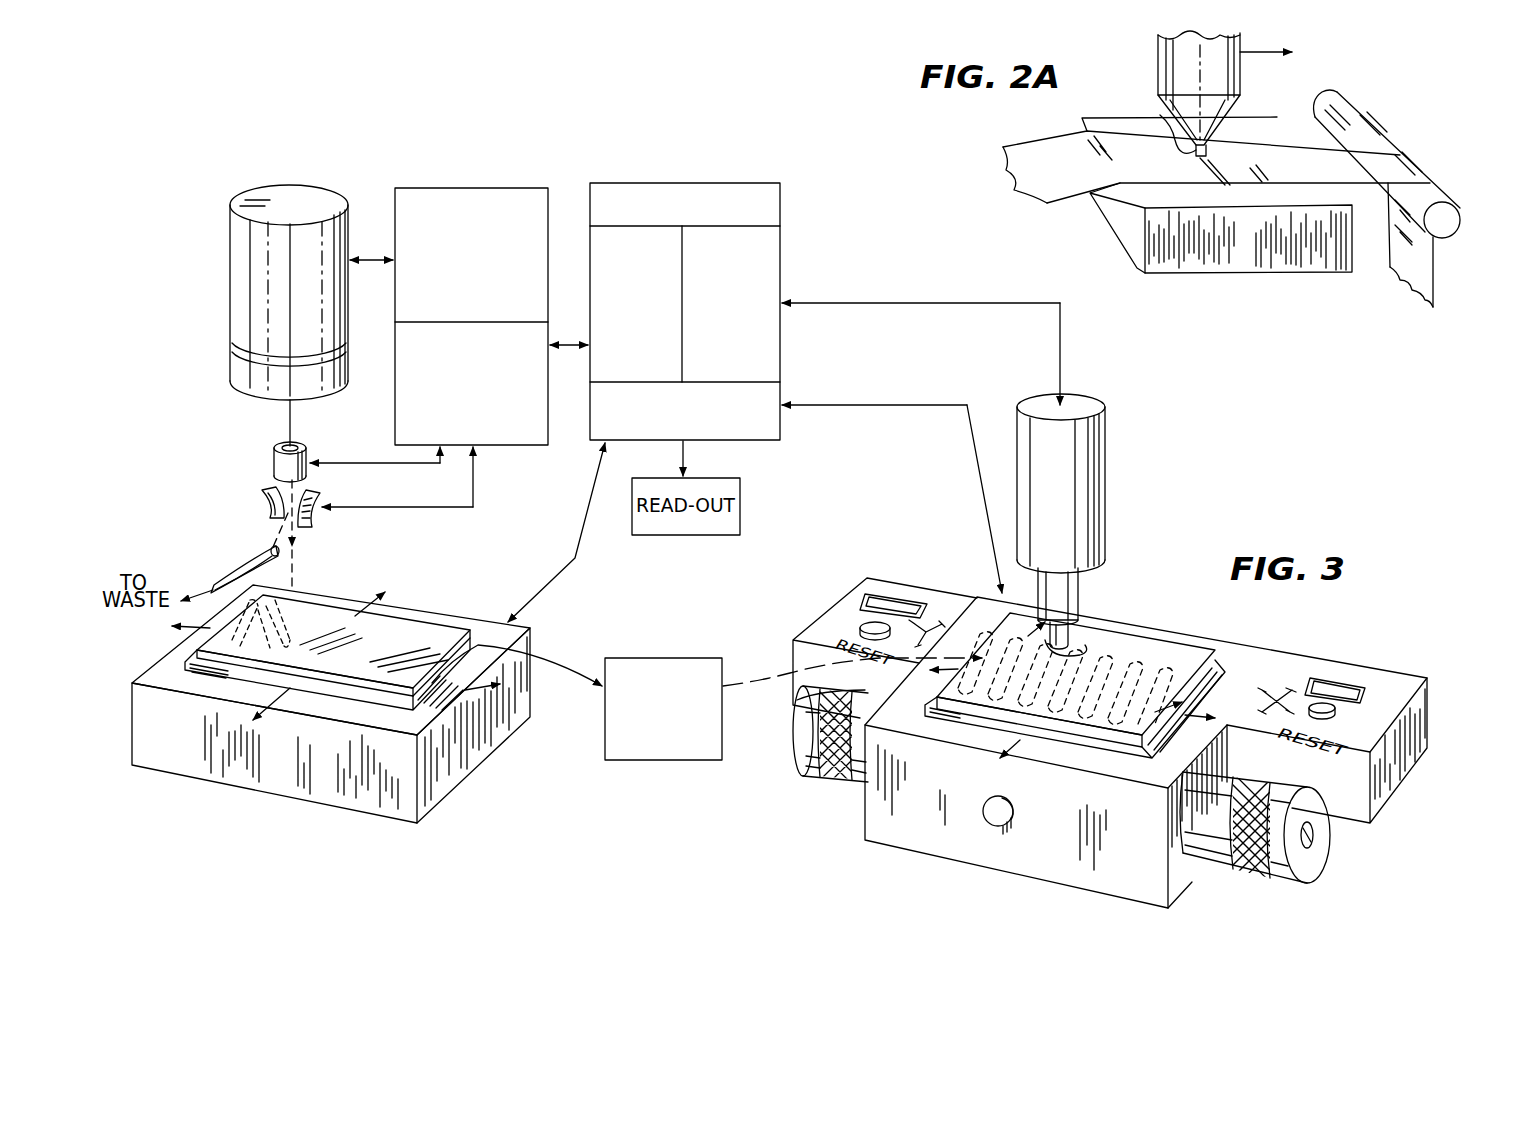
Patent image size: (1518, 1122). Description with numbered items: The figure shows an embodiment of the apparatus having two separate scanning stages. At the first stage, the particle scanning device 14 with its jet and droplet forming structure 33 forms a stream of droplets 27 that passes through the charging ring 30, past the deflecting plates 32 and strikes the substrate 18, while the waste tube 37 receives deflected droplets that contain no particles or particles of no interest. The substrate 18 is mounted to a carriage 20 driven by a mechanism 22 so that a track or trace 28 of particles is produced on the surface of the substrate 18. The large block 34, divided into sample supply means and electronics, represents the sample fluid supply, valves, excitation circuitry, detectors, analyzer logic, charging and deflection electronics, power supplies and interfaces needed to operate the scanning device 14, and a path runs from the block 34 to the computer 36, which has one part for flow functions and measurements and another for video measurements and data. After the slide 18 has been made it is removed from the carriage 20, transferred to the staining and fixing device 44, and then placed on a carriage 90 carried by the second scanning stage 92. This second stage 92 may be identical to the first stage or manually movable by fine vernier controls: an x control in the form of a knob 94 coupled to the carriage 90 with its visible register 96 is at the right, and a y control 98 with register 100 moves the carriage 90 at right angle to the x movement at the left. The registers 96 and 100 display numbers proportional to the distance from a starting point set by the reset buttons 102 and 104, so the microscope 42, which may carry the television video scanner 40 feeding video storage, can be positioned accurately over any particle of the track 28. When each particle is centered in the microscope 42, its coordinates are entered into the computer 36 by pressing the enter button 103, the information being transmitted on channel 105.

The particle scanning device 14 is at (265, 292).
The droplet forming structure 33 is at (267, 364).
The stream of droplets 27 is at (290, 417).
The charging ring 30 is at (282, 461).
The deflecting plates 32 is at (262, 505).
The waste tube 37 is at (248, 582).
The track or trace 28 is at (287, 605).
The substrate 18 is at (422, 620).
The mechanism 22 is at (331, 704).
The carriage 20 is at (432, 682).
The block 34 is at (488, 188).
The computer 36 is at (704, 183).
The staining and fixing device 44 is at (681, 760).
The television video scanner 40 is at (1100, 498).
The microscope 42 is at (1082, 621).
The channel 105 is at (986, 501).
The second scanning stage 92 is at (905, 836).
The enter button 103 is at (975, 821).
The register 100 is at (902, 605).
The reset button 104 is at (861, 630).
The y control 98 is at (825, 758).
The carriage 90 is at (1095, 760).
The register 96 is at (1345, 683).
The reset button 102 is at (1336, 712).
The knob 94 is at (1220, 858).